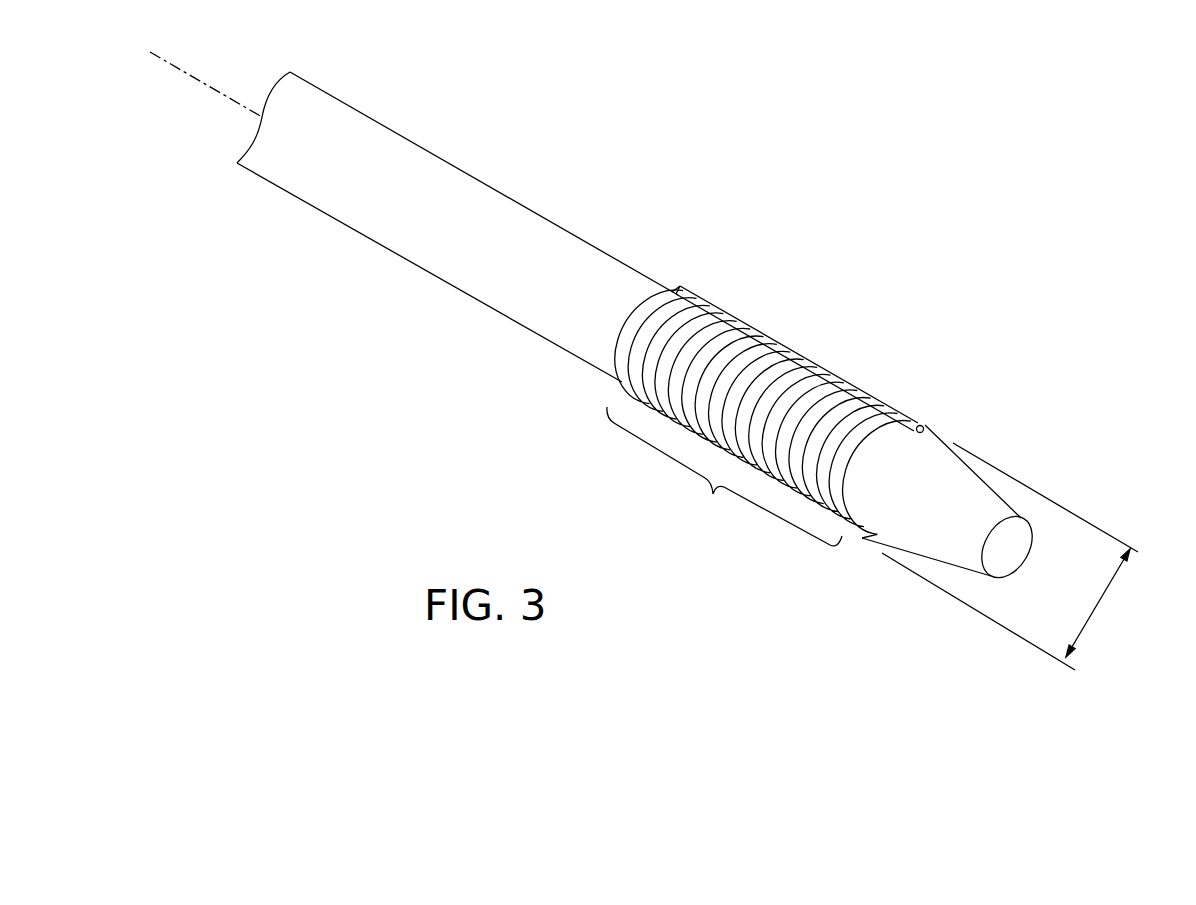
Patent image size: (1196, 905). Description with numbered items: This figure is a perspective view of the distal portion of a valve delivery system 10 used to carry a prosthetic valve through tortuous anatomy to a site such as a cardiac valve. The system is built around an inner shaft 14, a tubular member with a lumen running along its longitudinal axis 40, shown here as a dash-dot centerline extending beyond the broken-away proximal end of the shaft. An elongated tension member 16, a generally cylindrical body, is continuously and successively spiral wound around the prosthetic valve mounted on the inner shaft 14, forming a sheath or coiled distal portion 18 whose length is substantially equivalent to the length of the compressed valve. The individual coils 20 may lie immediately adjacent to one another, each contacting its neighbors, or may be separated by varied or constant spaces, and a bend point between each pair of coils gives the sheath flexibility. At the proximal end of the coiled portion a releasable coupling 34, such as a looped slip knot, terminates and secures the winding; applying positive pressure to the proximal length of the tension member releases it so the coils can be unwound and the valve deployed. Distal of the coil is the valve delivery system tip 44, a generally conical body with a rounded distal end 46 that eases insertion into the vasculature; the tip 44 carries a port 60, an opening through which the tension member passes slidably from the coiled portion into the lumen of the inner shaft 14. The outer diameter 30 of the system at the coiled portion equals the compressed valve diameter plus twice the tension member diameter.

The valve delivery system 10 is at (1068, 240).
The inner shaft 14 is at (326, 118).
The elongated tension member 16 is at (890, 408).
The coiled distal portion 18 is at (713, 494).
The coils 20 is at (772, 362).
The outer diameter 30 is at (1113, 583).
The releasable coupling 34 is at (674, 291).
The longitudinal axis 40 is at (190, 75).
The valve delivery system tip 44 is at (923, 545).
The distal end 46 is at (1018, 527).
The port 60 is at (923, 425).